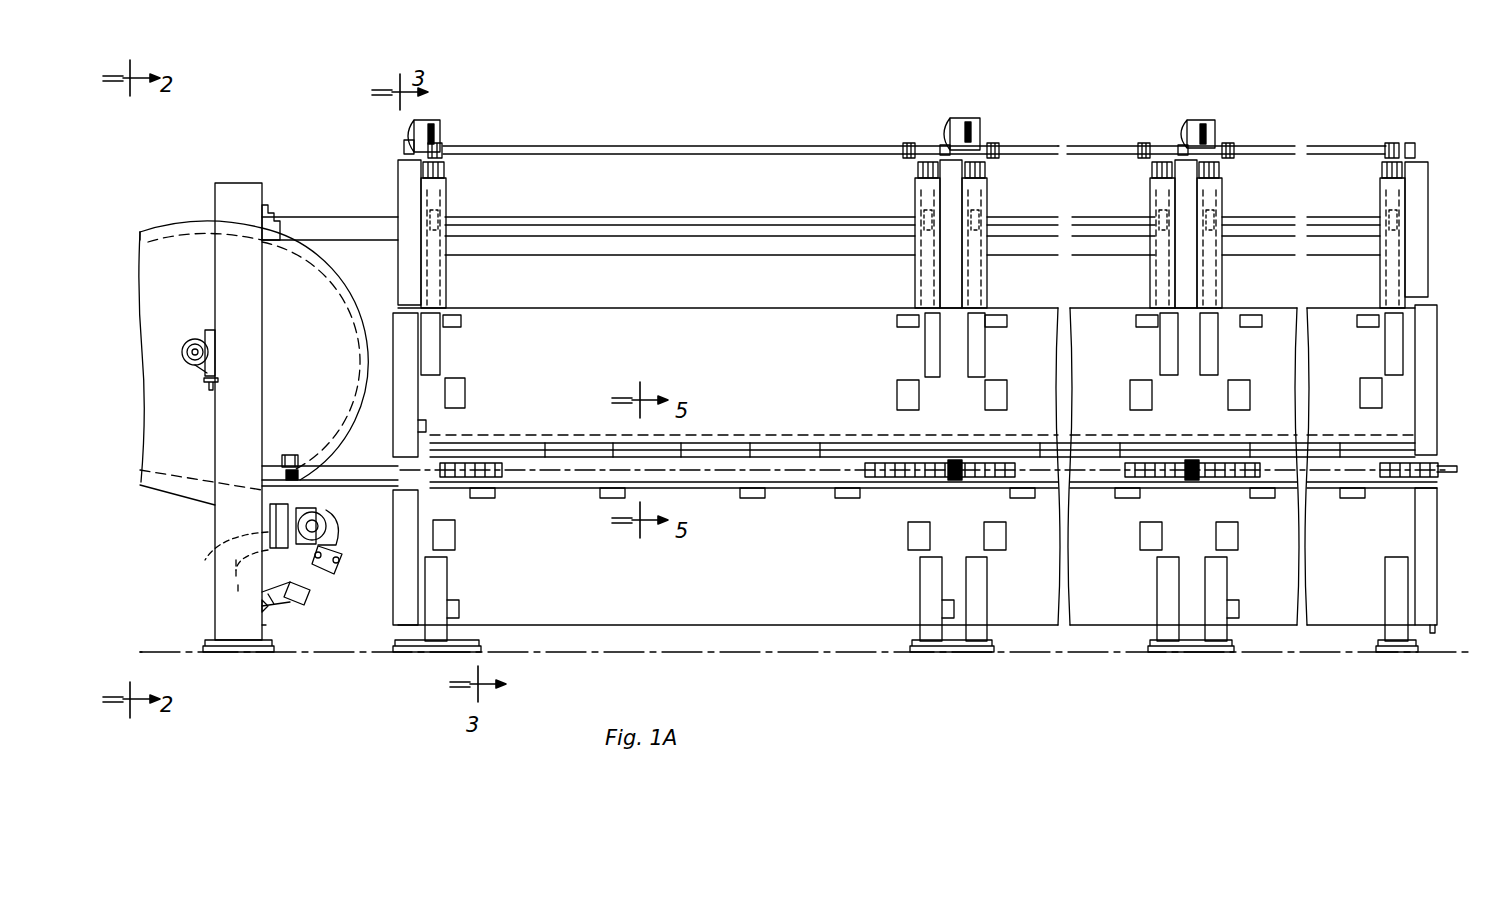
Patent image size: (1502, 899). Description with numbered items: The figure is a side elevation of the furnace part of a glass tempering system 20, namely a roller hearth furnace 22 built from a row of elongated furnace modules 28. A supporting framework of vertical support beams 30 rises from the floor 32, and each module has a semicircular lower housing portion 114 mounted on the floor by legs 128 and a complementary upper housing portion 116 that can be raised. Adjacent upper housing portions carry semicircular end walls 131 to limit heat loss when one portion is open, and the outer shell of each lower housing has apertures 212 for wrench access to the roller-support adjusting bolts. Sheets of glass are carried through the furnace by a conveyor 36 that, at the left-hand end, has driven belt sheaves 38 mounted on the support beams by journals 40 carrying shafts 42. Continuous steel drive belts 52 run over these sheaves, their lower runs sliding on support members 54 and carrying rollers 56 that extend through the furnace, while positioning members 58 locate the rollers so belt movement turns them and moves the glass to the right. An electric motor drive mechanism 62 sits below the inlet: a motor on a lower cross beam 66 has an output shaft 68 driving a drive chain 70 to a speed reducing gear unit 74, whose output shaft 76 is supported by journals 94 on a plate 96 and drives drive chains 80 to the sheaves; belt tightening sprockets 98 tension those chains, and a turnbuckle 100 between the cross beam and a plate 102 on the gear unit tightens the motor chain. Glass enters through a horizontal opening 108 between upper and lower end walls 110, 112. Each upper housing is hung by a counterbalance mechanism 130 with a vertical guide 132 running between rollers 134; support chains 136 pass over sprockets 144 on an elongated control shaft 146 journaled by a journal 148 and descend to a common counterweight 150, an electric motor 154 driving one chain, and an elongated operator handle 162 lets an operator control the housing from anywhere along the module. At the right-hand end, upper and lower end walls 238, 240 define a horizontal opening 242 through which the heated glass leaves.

The glass tempering system 20 is at (1352, 106).
The roller hearth furnace 22 is at (1057, 112).
The furnace module 28 is at (678, 301).
The vertical support beam 30 is at (228, 277).
The floor 32 is at (350, 652).
The conveyor 36 is at (193, 210).
The driven belt sheave 38 is at (146, 228).
The journal 40 is at (198, 340).
The shaft 42 is at (202, 376).
The drive belt 52 is at (260, 206).
The support member 54 is at (497, 478).
The roller 56 is at (480, 464).
The positioning member 58 is at (472, 478).
The electric motor drive mechanism 62 is at (344, 552).
The lower cross beam 66 is at (264, 630).
The output shaft 68 is at (237, 586).
The drive chain 70 is at (268, 608).
The speed reducing gear unit 74 is at (332, 530).
The output shaft 76 is at (304, 508).
The drive chain 80 is at (334, 394).
The journal 94 is at (322, 512).
The plate 96 is at (272, 512).
The belt tightening sprocket 98 is at (226, 558).
The turnbuckle 100 is at (316, 596).
The plate 102 is at (328, 584).
The horizontal opening 108 is at (394, 436).
The upper end wall 110 is at (394, 340).
The lower end wall 112 is at (396, 556).
The lower housing portion 114 is at (730, 628).
The upper housing portion 116 is at (722, 306).
The leg 128 is at (448, 580).
The counterbalance mechanism 130 is at (908, 185).
The end wall 131 is at (953, 356).
The vertical guide 132 is at (950, 242).
The roller 134 is at (440, 212).
The support chain 136 is at (446, 172).
The sprocket 144 is at (444, 152).
The control shaft 146 is at (698, 150).
The journal 148 is at (406, 157).
The counterweight 150 is at (446, 274).
The electric motor 154 is at (410, 135).
The operator handle 162 is at (790, 434).
The aperture 212 is at (480, 500).
The upper end wall 238 is at (1426, 392).
The lower end wall 240 is at (1430, 548).
The horizontal opening 242 is at (1435, 462).